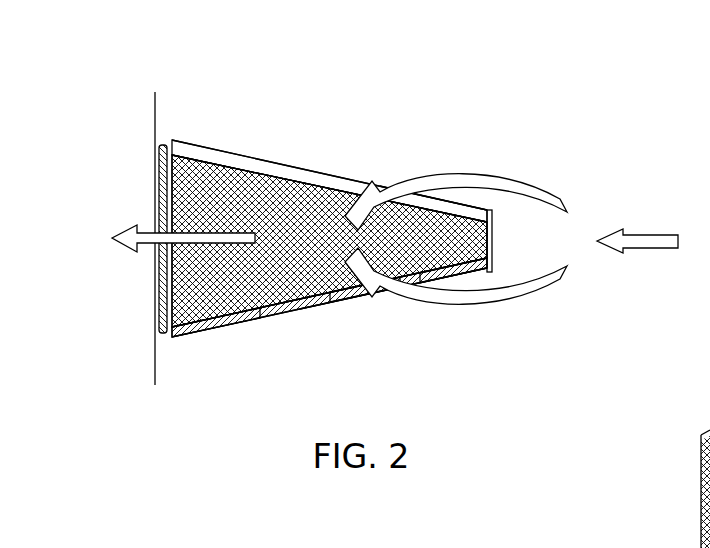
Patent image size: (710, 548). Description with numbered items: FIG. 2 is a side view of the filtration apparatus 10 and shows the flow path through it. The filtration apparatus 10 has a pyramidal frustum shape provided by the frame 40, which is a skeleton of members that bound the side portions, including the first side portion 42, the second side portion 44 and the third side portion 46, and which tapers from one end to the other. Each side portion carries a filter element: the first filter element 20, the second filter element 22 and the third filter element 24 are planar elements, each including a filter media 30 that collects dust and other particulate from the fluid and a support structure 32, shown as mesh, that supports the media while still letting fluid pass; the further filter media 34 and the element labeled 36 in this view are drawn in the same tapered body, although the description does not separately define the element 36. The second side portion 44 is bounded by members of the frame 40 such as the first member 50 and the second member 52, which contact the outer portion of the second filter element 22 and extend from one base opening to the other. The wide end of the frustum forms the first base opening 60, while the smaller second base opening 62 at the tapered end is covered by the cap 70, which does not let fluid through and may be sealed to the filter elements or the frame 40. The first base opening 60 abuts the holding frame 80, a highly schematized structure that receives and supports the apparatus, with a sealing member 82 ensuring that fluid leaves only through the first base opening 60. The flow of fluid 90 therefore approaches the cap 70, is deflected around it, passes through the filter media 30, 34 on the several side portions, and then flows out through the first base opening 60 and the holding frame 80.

The filtration apparatus 10 is at (391, 212).
The first filter element 20 is at (393, 330).
The second filter element 22 is at (329, 308).
The third filter element 24 is at (329, 144).
The filter media 30 is at (329, 336).
The support structure 32 is at (455, 266).
The filter media 34 is at (195, 306).
The filter media 36 is at (237, 196).
The frame 40 is at (433, 153).
The first side portion 42 is at (329, 338).
The second side portion 44 is at (329, 220).
The third side portion 46 is at (329, 147).
The first member 50 is at (367, 287).
The second member 52 is at (347, 182).
The first base opening 60 is at (158, 282).
The second base opening 62 is at (461, 283).
The cap 70 is at (461, 218).
The holding frame 80 is at (201, 216).
The sealing member 82 is at (182, 284).
The flow of fluid 90 is at (656, 233).